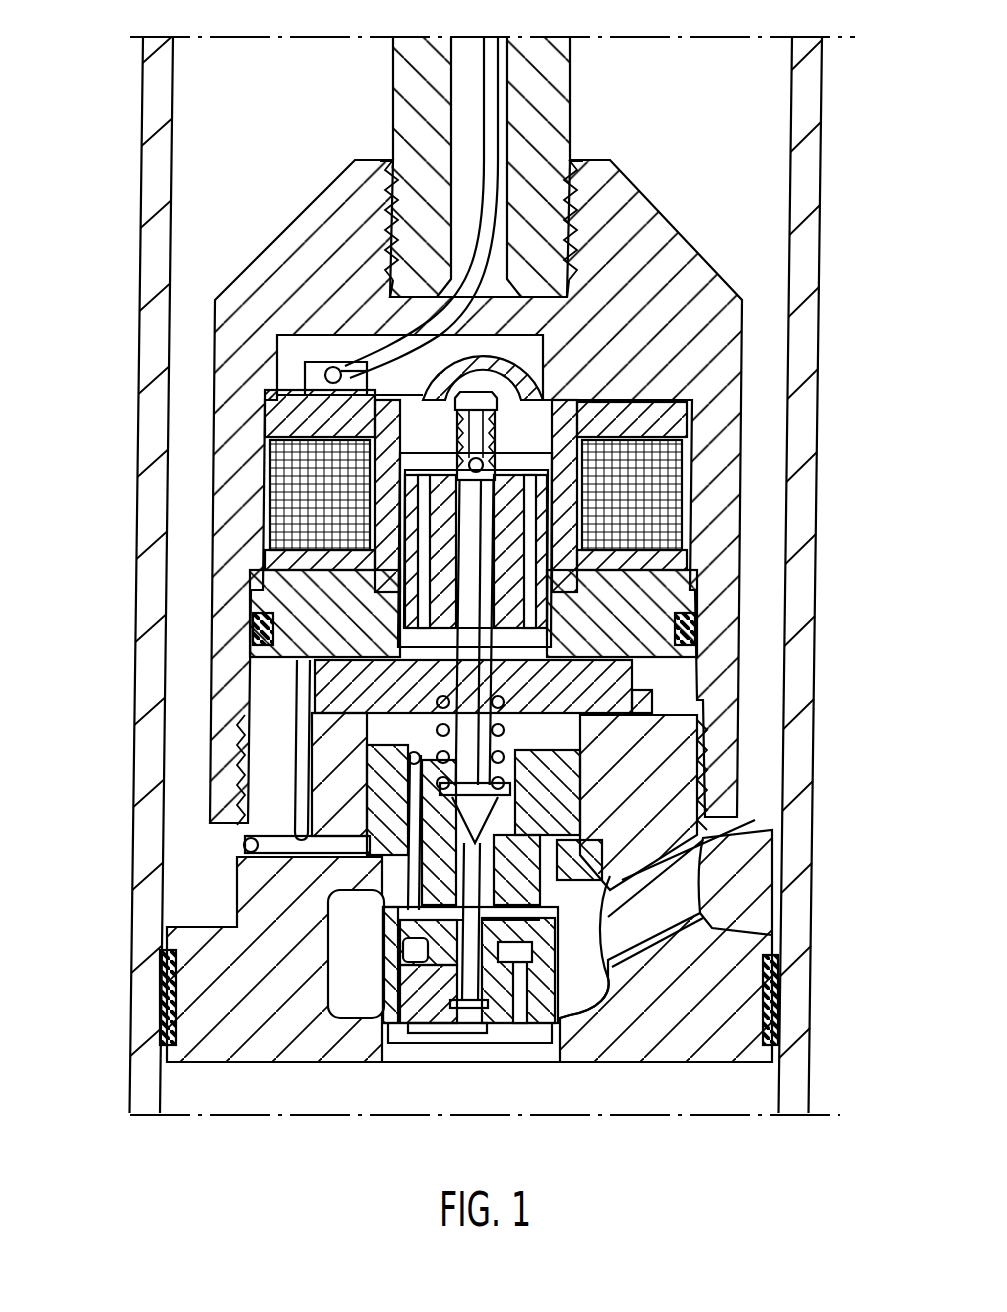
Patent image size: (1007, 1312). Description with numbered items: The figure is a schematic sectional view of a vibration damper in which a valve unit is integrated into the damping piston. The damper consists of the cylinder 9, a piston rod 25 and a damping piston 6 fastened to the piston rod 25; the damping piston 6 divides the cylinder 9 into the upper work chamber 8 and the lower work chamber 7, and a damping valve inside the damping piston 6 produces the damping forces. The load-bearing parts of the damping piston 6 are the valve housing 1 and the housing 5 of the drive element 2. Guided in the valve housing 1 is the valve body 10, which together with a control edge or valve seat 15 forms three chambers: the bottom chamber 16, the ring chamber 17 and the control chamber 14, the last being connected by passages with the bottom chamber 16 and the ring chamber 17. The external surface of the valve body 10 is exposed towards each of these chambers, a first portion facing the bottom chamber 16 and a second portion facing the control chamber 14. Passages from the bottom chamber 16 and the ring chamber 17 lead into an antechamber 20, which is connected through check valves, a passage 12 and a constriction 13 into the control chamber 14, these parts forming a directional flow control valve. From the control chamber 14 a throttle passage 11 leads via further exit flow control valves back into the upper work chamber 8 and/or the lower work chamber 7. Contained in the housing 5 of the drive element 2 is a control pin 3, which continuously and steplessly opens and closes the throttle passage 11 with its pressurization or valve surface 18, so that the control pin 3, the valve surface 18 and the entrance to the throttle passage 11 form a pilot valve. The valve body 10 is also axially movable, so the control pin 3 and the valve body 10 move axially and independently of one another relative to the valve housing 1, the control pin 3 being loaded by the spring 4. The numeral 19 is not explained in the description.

The valve housing 1 is at (645, 760).
The drive element 2 is at (540, 408).
The control pin 3 is at (478, 593).
The spring 4 is at (565, 700).
The housing 5 is at (610, 242).
The damping piston 6 is at (650, 1027).
The lower work chamber 7 is at (690, 1088).
The upper work chamber 8 is at (737, 86).
The cylinder 9 is at (805, 153).
The valve body 10 is at (557, 795).
The throttle passage 11 is at (705, 842).
The passage 12 is at (598, 892).
The constriction 13 is at (545, 738).
The control chamber 14 is at (413, 735).
The valve seat 15 is at (355, 1003).
The bottom chamber 16 is at (430, 1050).
The ring chamber 17 is at (345, 910).
The valve surface 18 is at (445, 826).
The passage 19 is at (560, 908).
The antechamber 20 is at (535, 962).
The piston rod 25 is at (547, 57).